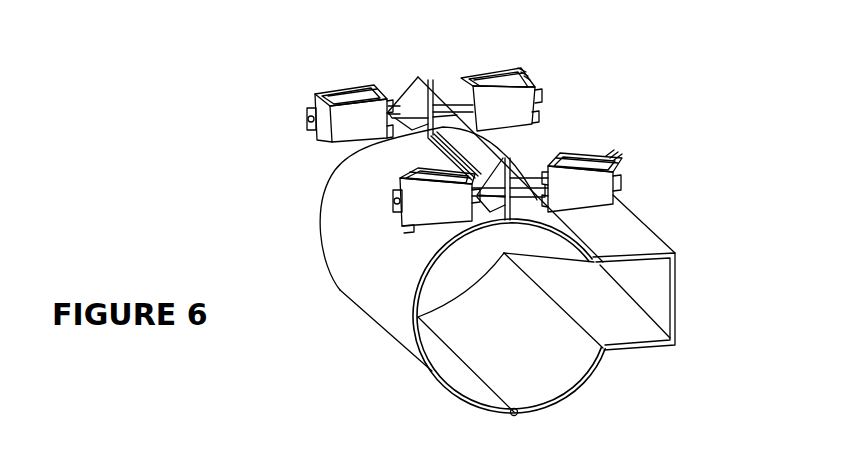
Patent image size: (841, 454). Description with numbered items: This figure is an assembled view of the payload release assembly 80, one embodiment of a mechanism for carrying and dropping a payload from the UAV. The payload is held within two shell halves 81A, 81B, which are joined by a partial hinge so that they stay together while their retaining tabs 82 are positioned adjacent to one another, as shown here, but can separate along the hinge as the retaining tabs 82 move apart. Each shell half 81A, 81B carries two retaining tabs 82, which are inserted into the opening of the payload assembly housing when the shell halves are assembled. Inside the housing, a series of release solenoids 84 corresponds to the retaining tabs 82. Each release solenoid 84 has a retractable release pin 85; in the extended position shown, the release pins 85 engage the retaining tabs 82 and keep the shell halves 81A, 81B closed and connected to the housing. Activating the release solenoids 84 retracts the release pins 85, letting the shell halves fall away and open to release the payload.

The payload release assembly 80 is at (600, 105).
The shell half 81A is at (340, 290).
The shell half 81B is at (640, 237).
The retaining tab 82 is at (433, 89).
The release solenoid 84 is at (618, 166).
The release pin 85 is at (537, 185).